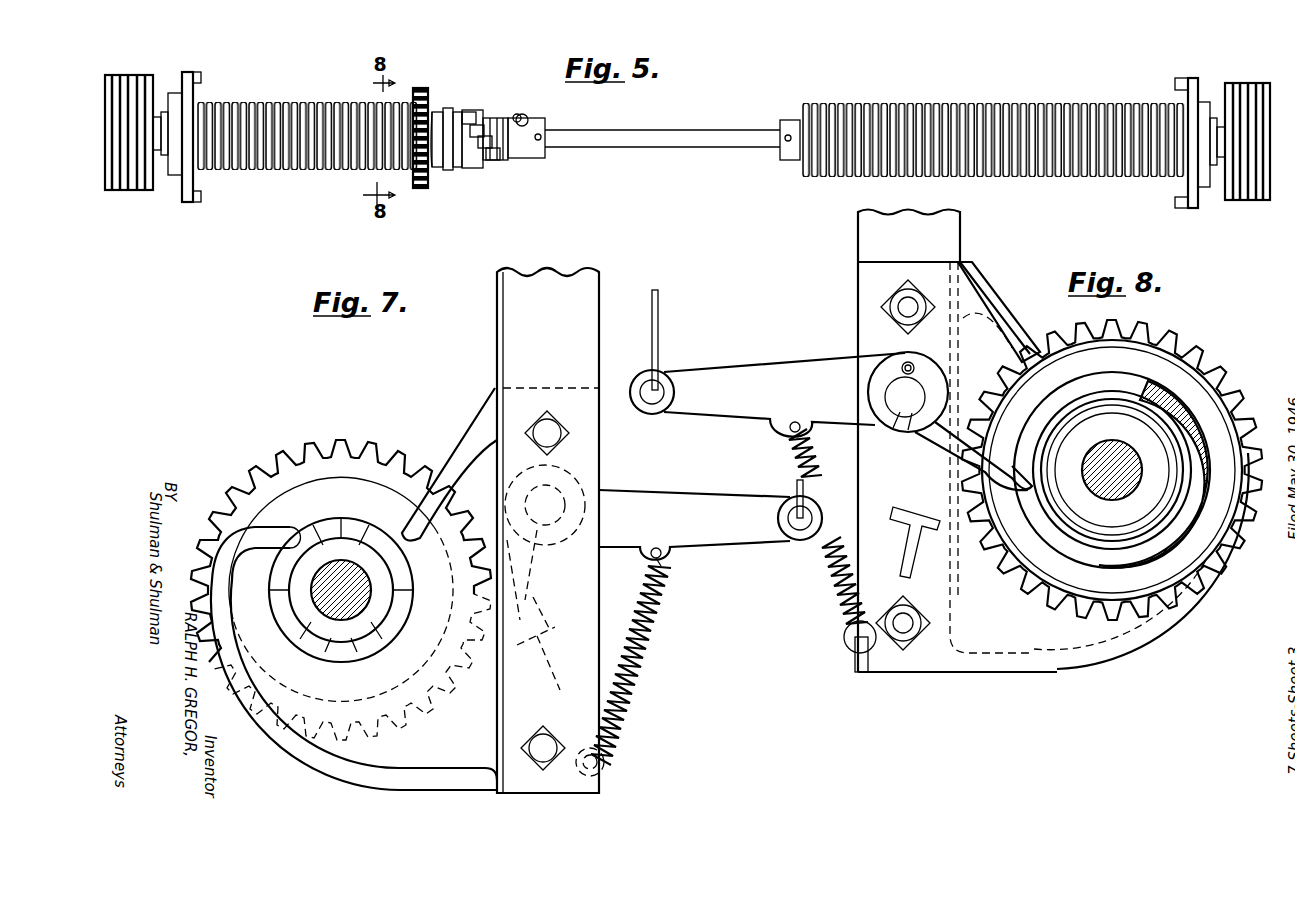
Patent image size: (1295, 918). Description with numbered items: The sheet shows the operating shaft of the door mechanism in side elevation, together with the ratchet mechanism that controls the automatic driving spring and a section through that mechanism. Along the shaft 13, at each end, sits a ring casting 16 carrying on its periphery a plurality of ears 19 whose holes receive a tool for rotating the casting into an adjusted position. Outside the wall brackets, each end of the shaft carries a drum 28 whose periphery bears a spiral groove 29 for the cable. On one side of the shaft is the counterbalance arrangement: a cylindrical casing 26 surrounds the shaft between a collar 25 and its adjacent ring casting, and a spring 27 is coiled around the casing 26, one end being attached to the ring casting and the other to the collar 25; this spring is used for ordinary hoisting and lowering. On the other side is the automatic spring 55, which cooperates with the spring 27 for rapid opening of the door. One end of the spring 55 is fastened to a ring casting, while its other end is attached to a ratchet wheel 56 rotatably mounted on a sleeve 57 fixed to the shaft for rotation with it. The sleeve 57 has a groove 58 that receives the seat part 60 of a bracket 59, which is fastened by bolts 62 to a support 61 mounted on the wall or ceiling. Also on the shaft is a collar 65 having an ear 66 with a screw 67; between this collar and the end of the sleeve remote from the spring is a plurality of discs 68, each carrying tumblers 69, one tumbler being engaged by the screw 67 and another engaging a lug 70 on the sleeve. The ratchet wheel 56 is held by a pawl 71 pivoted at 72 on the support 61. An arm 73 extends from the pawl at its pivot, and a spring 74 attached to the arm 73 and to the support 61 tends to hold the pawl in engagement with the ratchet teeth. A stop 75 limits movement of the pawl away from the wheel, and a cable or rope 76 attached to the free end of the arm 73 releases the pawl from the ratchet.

In FIG. 5, the shaft 13 is at (163, 155).
In FIG. 7, the shaft 13 is at (334, 618).
In FIG. 8, the shaft 13 is at (1112, 443).
In FIG. 5, the ring casting 16 is at (187, 72).
In FIG. 5, the ears 19 is at (201, 76).
In FIG. 5, the collar 25 is at (780, 124).
In FIG. 5, the cylindrical casing 26 is at (985, 105).
In FIG. 8, the cylindrical casing 26 is at (1102, 392).
In FIG. 5, the spring 27 is at (884, 105).
In FIG. 5, the drum 28 is at (122, 78).
In FIG. 5, the groove 29 is at (137, 190).
In FIG. 5, the automatic spring 55 is at (328, 104).
In FIG. 8, the automatic spring 55 is at (1190, 385).
In FIG. 5, the ratchet wheel 56 is at (420, 88).
In FIG. 7, the ratchet wheel 56 is at (262, 466).
In FIG. 8, the ratchet wheel 56 is at (1160, 330).
In FIG. 5, the sleeve 57 is at (437, 112).
In FIG. 5, the groove 58 is at (434, 170).
In FIG. 7, the groove 58 is at (378, 640).
In FIG. 8, the groove 58 is at (1062, 538).
In FIG. 7, the bracket 59 is at (447, 456).
In FIG. 8, the bracket 59 is at (988, 318).
In FIG. 7, the seat part 60 is at (424, 540).
In FIG. 8, the seat part 60 is at (1072, 398).
In FIG. 7, the support 61 is at (579, 280).
In FIG. 8, the support 61 is at (858, 240).
In FIG. 7, the bolts 62 is at (552, 434).
In FIG. 8, the bolts 62 is at (895, 302).
In FIG. 5, the collar 65 is at (545, 124).
In FIG. 5, the ear 66 is at (526, 116).
In FIG. 5, the screw 67 is at (517, 114).
In FIG. 5, the discs 68 is at (468, 168).
In FIG. 7, the discs 68 is at (360, 535).
In FIG. 5, the tumblers 69 is at (480, 125).
In FIG. 7, the tumblers 69 is at (342, 518).
In FIG. 5, the lug 70 is at (450, 110).
In FIG. 7, the pawl 71 is at (536, 627).
In FIG. 8, the pawl 71 is at (928, 454).
In FIG. 7, the pivot 72 is at (563, 488).
In FIG. 8, the pivot 72 is at (885, 376).
In FIG. 7, the arm 73 is at (736, 372).
In FIG. 7, the spring 74 is at (648, 652).
In FIG. 8, the spring 74 is at (838, 603).
In FIG. 7, the stop 75 is at (536, 672).
In FIG. 8, the stop 75 is at (898, 545).
In FIG. 7, the cable or rope 76 is at (662, 300).
In FIG. 8, the cable or rope 76 is at (908, 368).